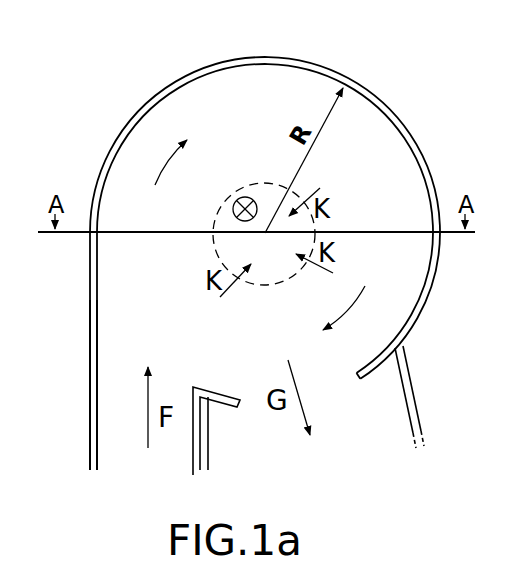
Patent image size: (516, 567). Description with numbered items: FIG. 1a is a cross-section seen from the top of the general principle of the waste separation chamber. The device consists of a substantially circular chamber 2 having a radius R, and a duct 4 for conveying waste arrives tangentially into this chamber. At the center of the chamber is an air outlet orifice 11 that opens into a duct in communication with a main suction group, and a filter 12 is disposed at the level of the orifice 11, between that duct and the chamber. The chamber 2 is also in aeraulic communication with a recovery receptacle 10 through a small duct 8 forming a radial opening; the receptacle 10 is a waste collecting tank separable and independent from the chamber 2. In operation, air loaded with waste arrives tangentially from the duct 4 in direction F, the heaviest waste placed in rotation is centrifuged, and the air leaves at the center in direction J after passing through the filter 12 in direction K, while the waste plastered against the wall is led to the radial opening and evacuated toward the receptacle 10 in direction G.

The separation chamber 2 is at (340, 72).
The duct 4 is at (97, 452).
The small duct 8 is at (328, 390).
The recovery receptacle 10 is at (415, 386).
The orifice 11 is at (239, 251).
The filter 12 is at (263, 181).